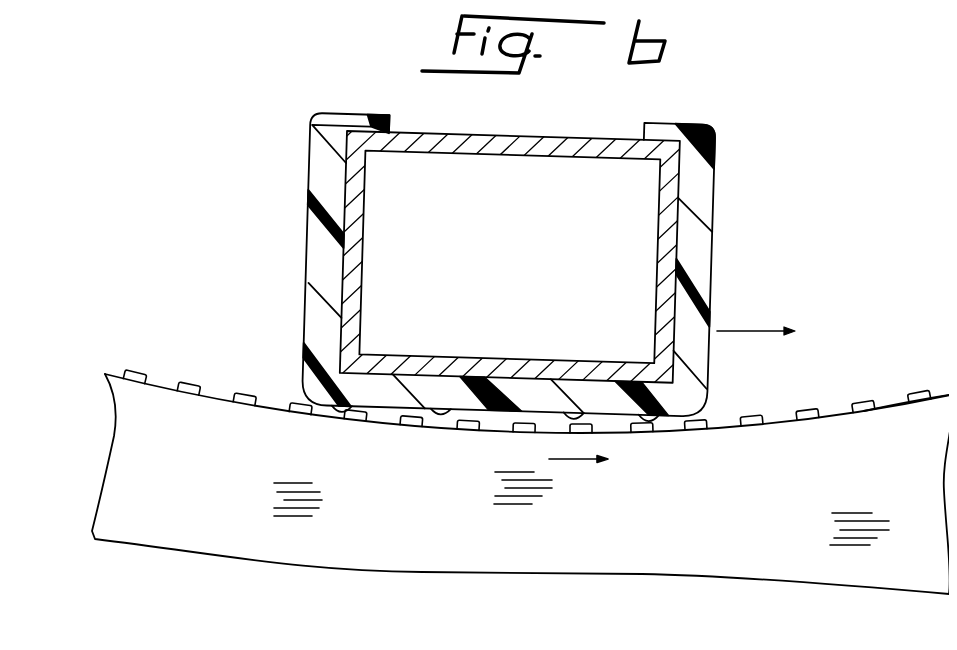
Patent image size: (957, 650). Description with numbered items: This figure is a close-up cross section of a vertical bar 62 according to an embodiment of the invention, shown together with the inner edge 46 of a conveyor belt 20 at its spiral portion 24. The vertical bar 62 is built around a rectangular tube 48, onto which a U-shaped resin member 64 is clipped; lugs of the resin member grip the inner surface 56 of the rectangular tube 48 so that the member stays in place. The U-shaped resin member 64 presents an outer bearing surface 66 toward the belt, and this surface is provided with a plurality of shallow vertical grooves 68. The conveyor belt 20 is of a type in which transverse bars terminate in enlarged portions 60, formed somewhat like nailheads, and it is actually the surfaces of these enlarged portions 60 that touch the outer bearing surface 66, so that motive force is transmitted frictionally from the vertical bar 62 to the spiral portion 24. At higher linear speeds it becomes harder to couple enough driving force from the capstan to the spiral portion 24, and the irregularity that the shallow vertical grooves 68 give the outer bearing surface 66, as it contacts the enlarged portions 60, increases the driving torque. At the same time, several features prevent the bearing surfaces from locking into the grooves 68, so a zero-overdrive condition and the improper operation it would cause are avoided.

The conveyor belt 20 is at (98, 490).
The spiral portion 24 is at (913, 410).
The inner edge 46 is at (160, 386).
The rectangular tube 48 is at (560, 138).
The inner surface 56 is at (462, 135).
The enlarged portion 60 is at (240, 393).
The vertical bar 62 is at (780, 152).
The U-shaped resin member 64 is at (702, 273).
The outer bearing surface 66 is at (608, 420).
The shallow vertical grooves 68 is at (502, 413).